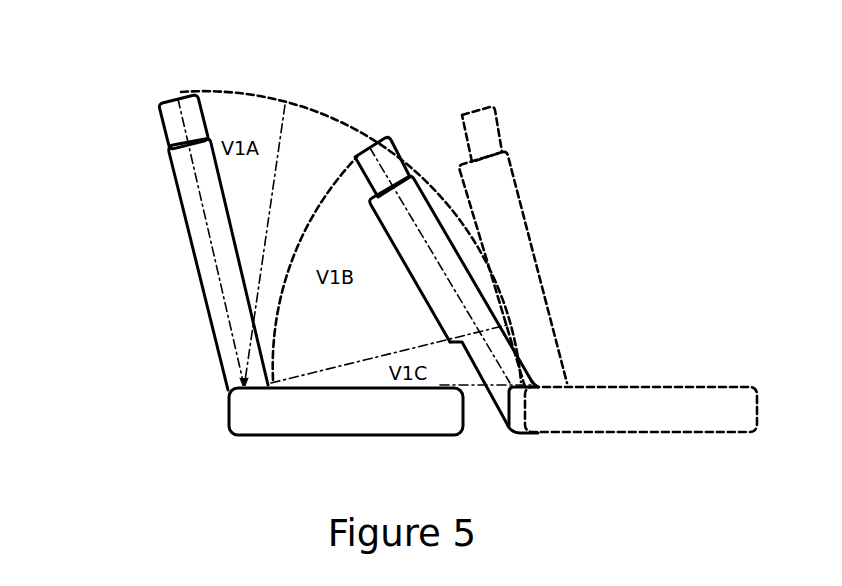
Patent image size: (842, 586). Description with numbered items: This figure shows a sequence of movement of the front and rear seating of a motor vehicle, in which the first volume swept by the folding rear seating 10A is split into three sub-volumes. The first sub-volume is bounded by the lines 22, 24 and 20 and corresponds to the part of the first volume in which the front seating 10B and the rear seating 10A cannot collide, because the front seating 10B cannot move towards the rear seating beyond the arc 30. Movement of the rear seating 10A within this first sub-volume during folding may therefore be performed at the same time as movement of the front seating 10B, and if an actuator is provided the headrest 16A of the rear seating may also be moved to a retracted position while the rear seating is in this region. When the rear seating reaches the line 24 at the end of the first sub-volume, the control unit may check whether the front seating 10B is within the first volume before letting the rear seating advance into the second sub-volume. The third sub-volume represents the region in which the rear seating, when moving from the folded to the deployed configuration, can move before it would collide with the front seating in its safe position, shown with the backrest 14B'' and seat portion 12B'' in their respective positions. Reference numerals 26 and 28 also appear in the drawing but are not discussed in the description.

The rear seating 10A is at (118, 143).
The front seating 10B is at (593, 162).
The headrest 16A is at (168, 110).
The line 22 is at (210, 243).
The seat cushion of first seat 26 is at (317, 377).
The line 20 is at (233, 92).
The line 24 is at (283, 118).
The arc 30 is at (357, 157).
The pivot of second seat back 28 is at (477, 383).
The backrest 14B'' is at (548, 247).
The seat portion 12B'' is at (641, 369).